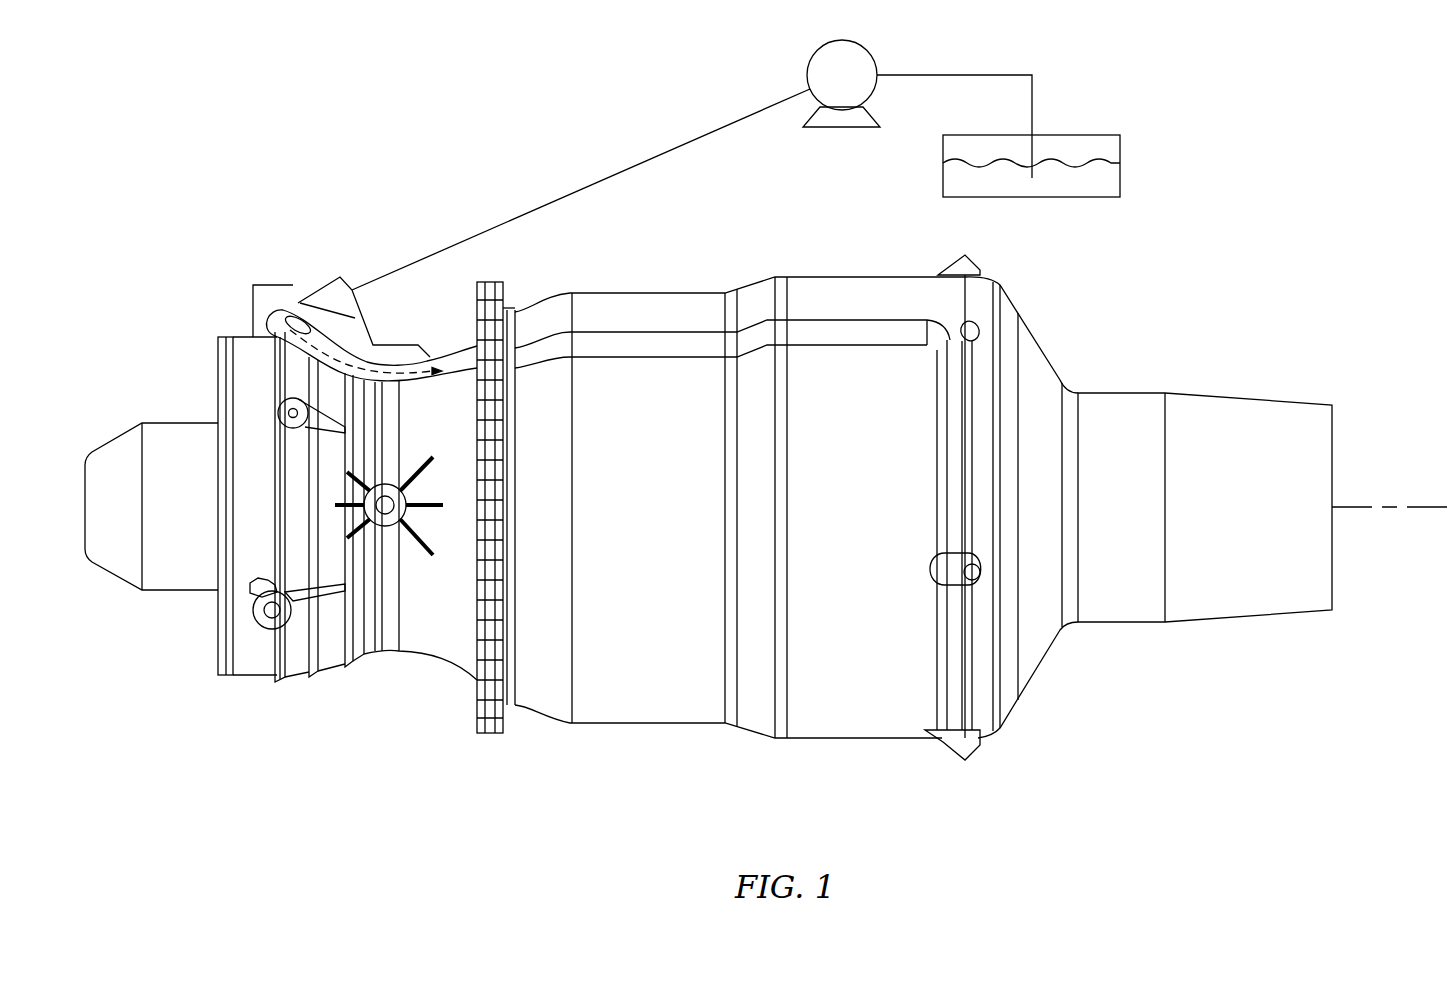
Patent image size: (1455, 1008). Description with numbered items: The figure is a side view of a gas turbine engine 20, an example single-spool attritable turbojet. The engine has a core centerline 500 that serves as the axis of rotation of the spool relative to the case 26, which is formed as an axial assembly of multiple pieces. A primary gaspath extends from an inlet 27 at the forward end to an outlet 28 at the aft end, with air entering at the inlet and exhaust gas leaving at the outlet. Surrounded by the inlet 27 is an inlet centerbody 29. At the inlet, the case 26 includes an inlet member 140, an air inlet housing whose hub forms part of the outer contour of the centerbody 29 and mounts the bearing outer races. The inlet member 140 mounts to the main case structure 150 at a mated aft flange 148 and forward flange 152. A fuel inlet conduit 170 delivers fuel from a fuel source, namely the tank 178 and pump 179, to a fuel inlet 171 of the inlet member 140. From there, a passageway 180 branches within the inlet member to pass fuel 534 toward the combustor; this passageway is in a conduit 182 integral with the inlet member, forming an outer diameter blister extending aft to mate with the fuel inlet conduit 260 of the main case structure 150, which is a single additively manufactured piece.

The gas turbine engine 20 is at (265, 752).
The case 26 is at (653, 748).
The inlet 27 is at (210, 647).
The outlet 28 is at (1340, 578).
The inlet centerbody 29 is at (170, 410).
The inlet member 140 is at (313, 686).
The aft flange 148 is at (475, 740).
The main case structure 150 is at (757, 742).
The forward flange 152 is at (505, 743).
The fuel inlet conduit 170 is at (532, 210).
The fuel inlet 171 is at (352, 287).
The tank 178 is at (1135, 147).
The pump 179 is at (876, 43).
The passageway 180 is at (312, 312).
The conduit 182 is at (383, 362).
The fuel inlet conduit 260 is at (630, 342).
The core centerline 500 is at (1437, 506).
The fuel 534 is at (420, 348).